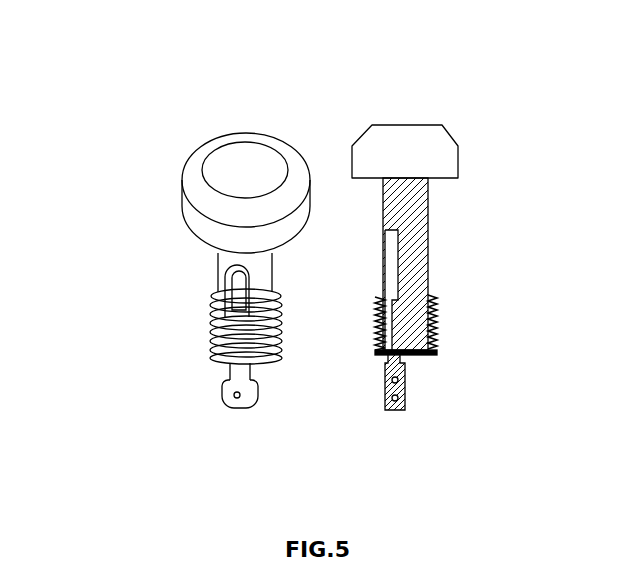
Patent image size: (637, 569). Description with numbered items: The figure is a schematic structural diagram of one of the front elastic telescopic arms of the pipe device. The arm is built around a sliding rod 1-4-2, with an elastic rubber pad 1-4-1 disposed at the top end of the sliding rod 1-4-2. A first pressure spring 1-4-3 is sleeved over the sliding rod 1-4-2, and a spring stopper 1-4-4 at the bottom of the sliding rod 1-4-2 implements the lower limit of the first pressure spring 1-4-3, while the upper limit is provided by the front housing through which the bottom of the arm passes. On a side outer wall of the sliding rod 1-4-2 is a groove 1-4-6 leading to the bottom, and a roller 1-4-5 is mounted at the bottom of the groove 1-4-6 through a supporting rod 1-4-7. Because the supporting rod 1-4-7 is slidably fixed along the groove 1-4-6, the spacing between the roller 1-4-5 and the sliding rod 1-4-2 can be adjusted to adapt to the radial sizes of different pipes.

The elastic rubber pad 1-4-1 is at (351, 152).
The sliding rod 1-4-2 is at (222, 283).
The first pressure spring 1-4-3 is at (210, 330).
The spring stopper 1-4-4 is at (223, 364).
The roller 1-4-5 is at (252, 390).
The groove 1-4-6 is at (426, 224).
The supporting rod 1-4-7 is at (402, 366).